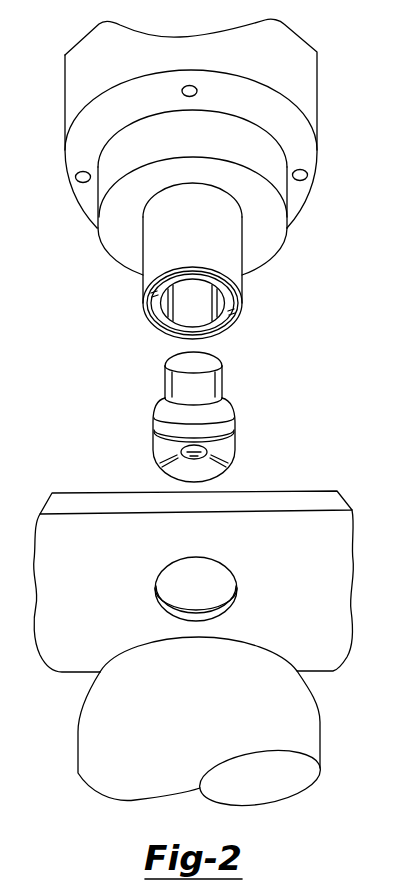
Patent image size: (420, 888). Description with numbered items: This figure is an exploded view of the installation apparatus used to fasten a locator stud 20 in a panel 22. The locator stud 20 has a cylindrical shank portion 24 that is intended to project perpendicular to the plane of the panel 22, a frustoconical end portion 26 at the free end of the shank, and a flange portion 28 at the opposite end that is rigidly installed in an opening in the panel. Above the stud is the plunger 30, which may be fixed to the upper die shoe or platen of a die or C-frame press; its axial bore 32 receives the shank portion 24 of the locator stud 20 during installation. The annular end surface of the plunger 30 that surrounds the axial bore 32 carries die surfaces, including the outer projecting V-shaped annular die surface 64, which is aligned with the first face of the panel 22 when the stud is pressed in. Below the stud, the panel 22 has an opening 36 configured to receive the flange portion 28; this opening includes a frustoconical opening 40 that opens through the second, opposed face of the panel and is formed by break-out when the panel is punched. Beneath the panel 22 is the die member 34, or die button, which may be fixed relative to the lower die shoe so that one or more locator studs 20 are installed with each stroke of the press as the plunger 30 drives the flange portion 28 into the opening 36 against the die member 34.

The locator stud 20 is at (210, 414).
The panel 22 is at (213, 634).
The shank portion 24 is at (165, 392).
The frustoconical end portion 26 is at (214, 361).
The flange portion 28 is at (157, 442).
The plunger 30 is at (198, 226).
The axial bore 32 is at (180, 318).
The die member 34 is at (308, 713).
The opening 36 is at (197, 617).
The frustoconical opening 40 is at (333, 648).
The second outer projecting V-shaped annular die surface 64 is at (233, 313).